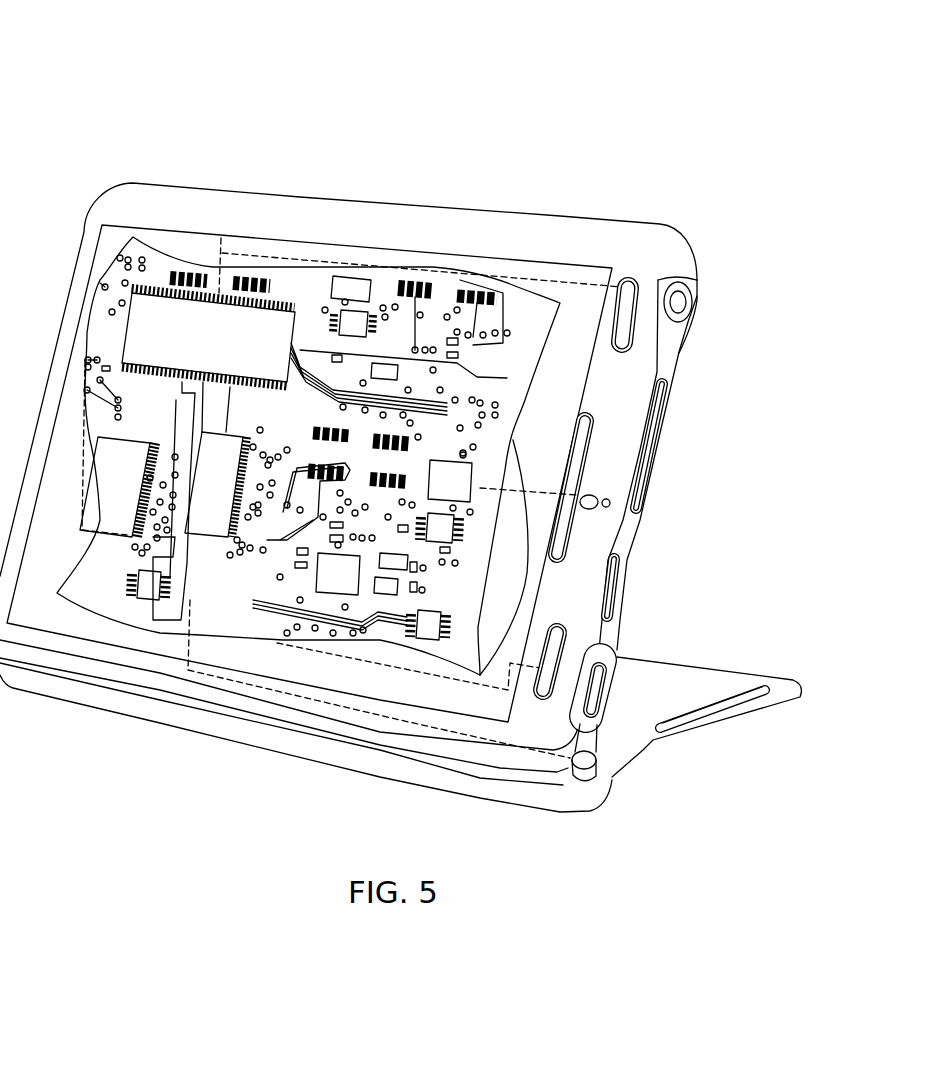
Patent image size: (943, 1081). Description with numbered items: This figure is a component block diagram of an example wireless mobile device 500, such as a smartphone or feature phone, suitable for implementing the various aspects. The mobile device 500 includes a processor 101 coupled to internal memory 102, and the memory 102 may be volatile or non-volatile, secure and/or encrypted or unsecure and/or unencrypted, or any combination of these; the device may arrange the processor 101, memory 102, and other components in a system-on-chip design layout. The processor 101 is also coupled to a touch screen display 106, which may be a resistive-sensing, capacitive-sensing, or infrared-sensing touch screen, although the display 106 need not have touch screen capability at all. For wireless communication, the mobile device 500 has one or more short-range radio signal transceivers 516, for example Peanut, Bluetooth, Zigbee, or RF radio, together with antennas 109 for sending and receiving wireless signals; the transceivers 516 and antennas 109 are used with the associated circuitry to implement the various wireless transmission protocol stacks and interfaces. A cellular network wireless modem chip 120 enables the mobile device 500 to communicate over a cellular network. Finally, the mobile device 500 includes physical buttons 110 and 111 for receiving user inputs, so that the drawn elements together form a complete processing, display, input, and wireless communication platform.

The mobile device 500 is at (201, 97).
The touch screen display 106 is at (467, 258).
The processor 101 is at (222, 346).
The internal memory 102 is at (140, 468).
The cellular network wireless modem chip 120 is at (460, 522).
The short-range radio signal transceiver 516 is at (147, 587).
The physical button 110 is at (632, 322).
The physical button 111 is at (563, 648).
The antenna 109 is at (597, 772).